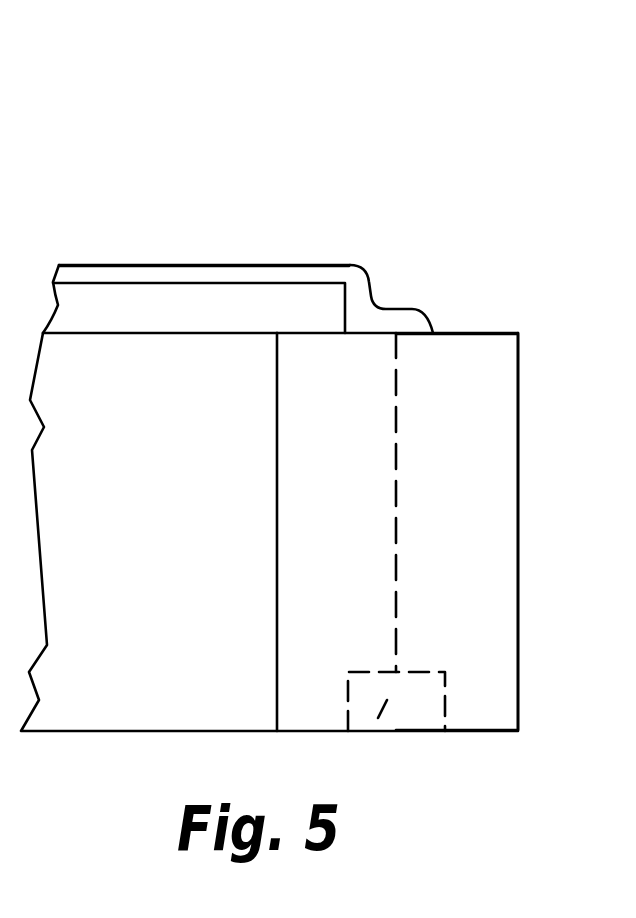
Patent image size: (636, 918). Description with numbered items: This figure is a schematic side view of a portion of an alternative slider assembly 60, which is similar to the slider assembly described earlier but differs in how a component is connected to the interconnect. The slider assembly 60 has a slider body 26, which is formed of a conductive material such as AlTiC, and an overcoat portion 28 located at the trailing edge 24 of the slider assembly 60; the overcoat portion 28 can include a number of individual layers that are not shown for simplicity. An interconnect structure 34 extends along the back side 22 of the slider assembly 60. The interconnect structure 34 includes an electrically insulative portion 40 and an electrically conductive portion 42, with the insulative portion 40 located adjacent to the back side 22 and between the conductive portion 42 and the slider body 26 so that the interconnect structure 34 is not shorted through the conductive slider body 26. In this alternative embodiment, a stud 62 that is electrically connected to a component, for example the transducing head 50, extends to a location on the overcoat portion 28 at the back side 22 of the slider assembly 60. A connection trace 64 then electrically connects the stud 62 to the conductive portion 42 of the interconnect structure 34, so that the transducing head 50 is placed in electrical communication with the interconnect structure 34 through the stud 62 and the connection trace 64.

The slider assembly 60 is at (217, 147).
The conductive portion 42 is at (250, 273).
The connection trace 64 is at (355, 292).
The back side 22 is at (315, 316).
The interconnect structure 34 is at (131, 295).
The insulative portion 40 is at (203, 307).
The slider body 26 is at (152, 622).
The trailing edge 24 is at (535, 562).
The overcoat portion 28 is at (485, 642).
The stud 62 is at (400, 423).
The transducing head 50 is at (373, 733).